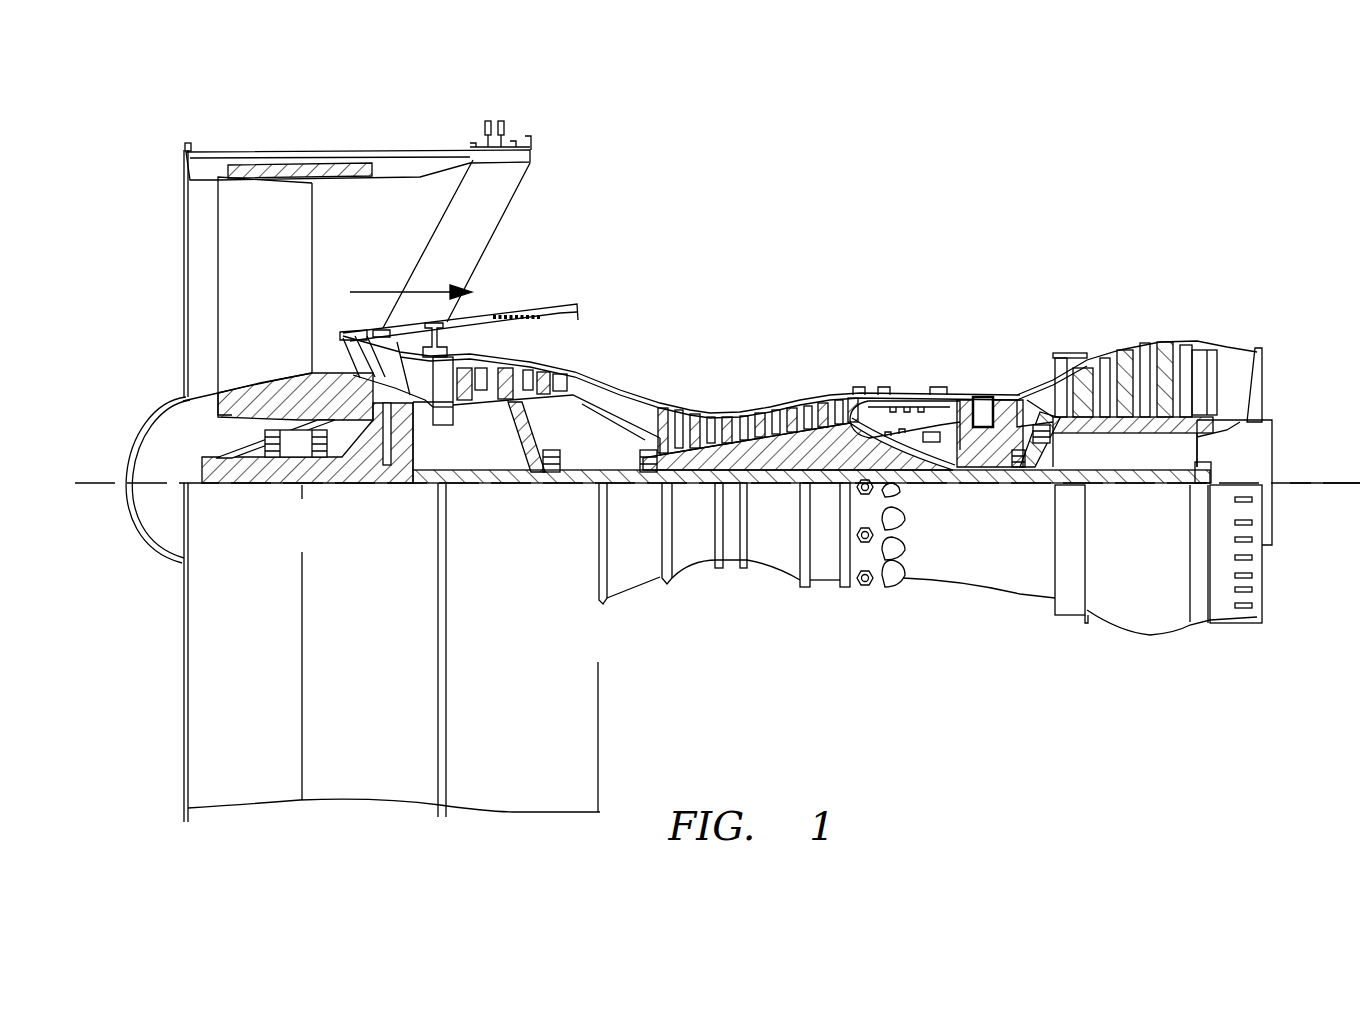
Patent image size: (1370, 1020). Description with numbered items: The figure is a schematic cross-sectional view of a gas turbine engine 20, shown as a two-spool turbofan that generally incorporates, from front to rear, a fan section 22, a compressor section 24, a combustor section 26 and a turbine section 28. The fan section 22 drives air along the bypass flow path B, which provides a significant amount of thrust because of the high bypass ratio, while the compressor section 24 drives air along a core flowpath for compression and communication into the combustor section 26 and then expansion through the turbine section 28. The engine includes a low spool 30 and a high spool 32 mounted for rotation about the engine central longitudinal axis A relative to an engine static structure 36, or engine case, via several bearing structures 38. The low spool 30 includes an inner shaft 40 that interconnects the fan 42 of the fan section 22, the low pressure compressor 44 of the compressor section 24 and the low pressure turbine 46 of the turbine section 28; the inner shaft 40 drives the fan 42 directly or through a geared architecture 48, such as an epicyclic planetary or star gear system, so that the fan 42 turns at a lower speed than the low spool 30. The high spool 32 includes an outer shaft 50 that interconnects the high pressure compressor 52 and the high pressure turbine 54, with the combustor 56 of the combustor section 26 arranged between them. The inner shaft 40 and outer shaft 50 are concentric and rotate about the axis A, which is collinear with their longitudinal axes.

The gas turbine engine 20 is at (945, 198).
The fan section 22 is at (440, 130).
The compressor section 24 is at (450, 272).
The combustor section 26 is at (853, 272).
The turbine section 28 is at (1198, 272).
The low spool 30 is at (779, 490).
The high spool 32 is at (822, 448).
The engine static structure 36 is at (827, 585).
The bearing structures 38 is at (335, 499).
The inner shaft 40 is at (630, 486).
The fan 42 is at (238, 298).
The low pressure compressor 44 is at (522, 378).
The low pressure turbine 46 is at (1130, 343).
The geared architecture 48 is at (396, 482).
The outer shaft 50 is at (920, 480).
The high pressure compressor 52 is at (763, 452).
The high pressure turbine 54 is at (985, 390).
The combustor 56 is at (908, 422).
The engine central longitudinal axis A is at (1348, 483).
The bypass flow path B is at (386, 291).